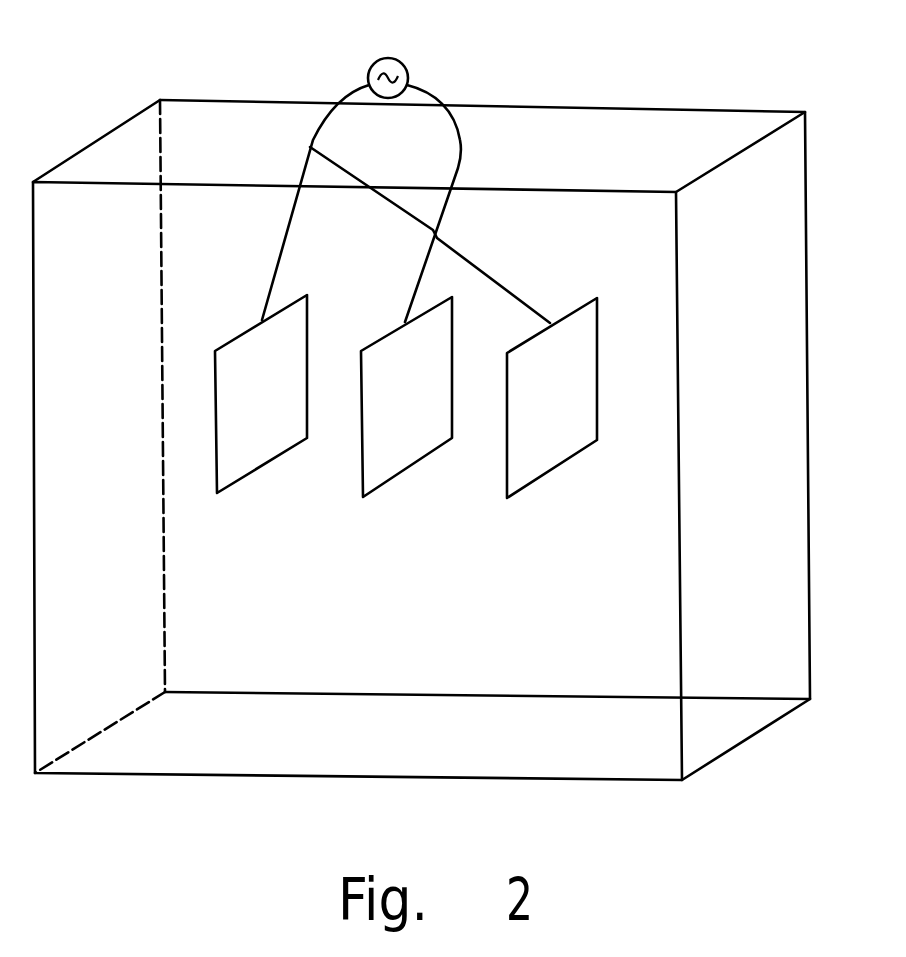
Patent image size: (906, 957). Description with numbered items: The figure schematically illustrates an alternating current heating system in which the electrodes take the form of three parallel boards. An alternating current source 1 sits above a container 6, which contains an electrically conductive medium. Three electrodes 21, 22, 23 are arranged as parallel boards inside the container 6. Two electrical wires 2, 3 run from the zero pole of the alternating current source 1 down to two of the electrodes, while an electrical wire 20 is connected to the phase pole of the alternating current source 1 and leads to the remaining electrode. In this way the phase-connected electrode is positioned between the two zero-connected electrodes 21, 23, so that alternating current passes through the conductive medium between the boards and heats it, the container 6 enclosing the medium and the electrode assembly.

The alternating current source 1 is at (407, 63).
The electrical wire 2 is at (305, 158).
The electrical wire 3 is at (463, 147).
The electrical wire 20 is at (353, 178).
The electrode 21 is at (278, 340).
The electrode 22 is at (570, 398).
The electrode 23 is at (423, 395).
The container 6 is at (805, 353).